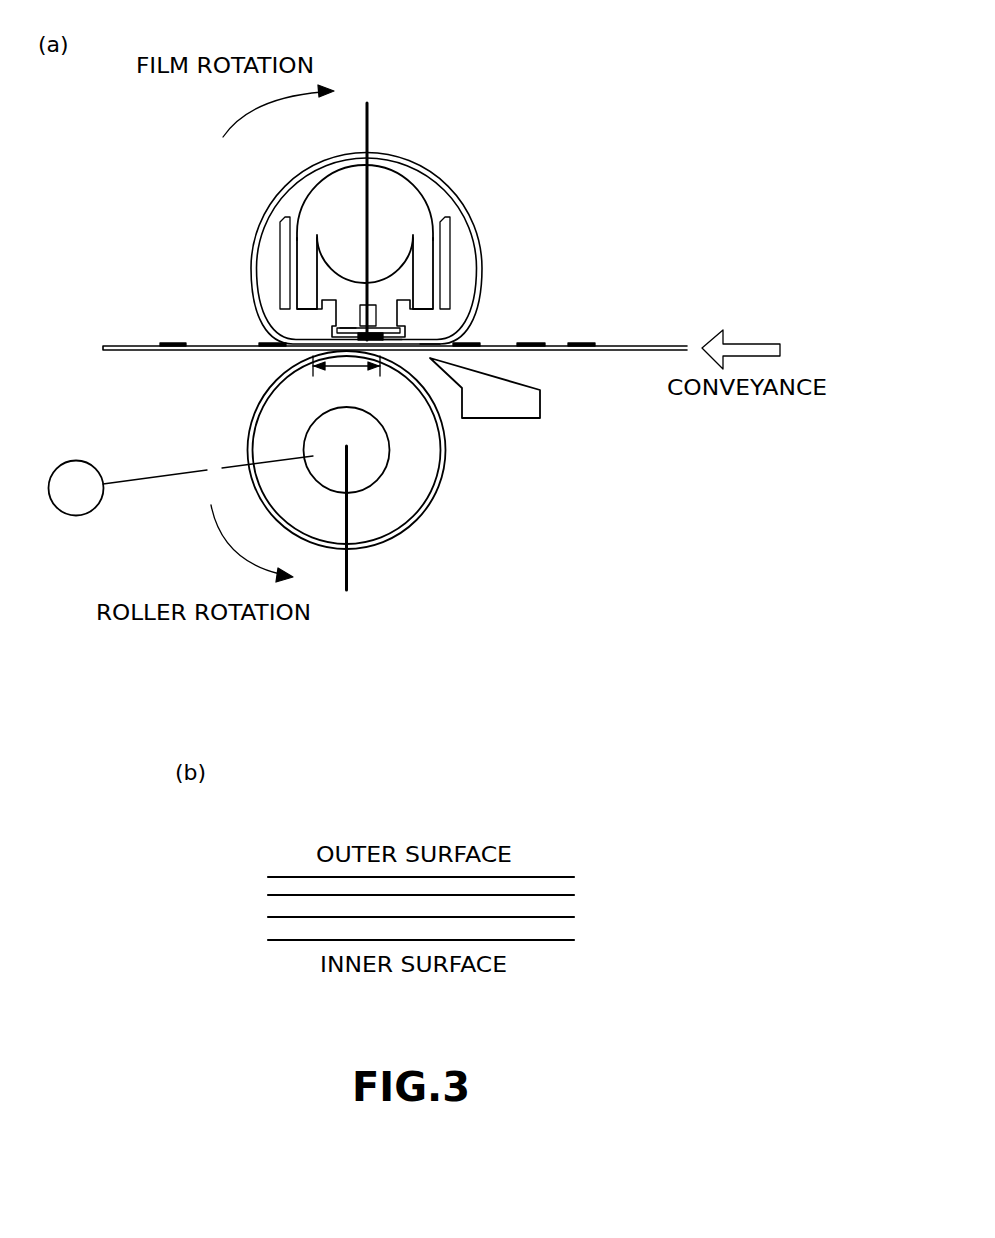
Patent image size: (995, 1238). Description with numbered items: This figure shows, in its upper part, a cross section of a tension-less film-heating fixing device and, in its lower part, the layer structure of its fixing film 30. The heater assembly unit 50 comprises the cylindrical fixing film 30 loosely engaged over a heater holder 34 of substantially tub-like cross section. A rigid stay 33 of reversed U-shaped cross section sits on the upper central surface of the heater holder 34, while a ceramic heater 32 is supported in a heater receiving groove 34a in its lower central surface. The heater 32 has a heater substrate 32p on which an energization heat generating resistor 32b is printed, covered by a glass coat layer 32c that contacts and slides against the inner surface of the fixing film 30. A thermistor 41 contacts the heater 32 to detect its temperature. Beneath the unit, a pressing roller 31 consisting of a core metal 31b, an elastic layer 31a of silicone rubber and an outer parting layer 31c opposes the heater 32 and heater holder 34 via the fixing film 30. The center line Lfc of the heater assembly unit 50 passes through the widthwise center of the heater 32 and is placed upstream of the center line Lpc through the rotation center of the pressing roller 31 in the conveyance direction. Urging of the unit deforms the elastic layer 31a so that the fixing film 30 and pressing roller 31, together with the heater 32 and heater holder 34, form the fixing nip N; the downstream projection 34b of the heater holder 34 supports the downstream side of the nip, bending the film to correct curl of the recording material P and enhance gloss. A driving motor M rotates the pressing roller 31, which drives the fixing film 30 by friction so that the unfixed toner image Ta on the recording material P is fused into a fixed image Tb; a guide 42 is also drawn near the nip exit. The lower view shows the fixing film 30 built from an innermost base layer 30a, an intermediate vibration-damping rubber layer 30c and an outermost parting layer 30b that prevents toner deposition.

The fixing film 30 is at (466, 208).
The film base layer 30a is at (451, 937).
The parting layer 30b is at (556, 883).
The rubber layer 30c is at (556, 907).
The pressing roller 31 is at (407, 459).
The elastic layer 31a is at (395, 487).
The core metal 31b is at (385, 447).
The parting layer 31c is at (417, 523).
The ceramic heater 32 is at (386, 293).
The energization heat generating resistor 32b is at (398, 367).
The glass coat layer 32c is at (432, 357).
The heater substrate 32p is at (412, 327).
The rigid stay 33 is at (388, 178).
The heater holder 34 is at (368, 276).
The heater receiving groove 34a is at (385, 320).
The downstream projection 34b is at (313, 338).
The thermistor 41 is at (348, 322).
The guide member 42 is at (508, 410).
The heater assembly unit 50 is at (427, 522).
The recording material P is at (672, 332).
The toner image Ta is at (553, 331).
The toner image (fixed) Tb is at (225, 345).
The driving motor M is at (181, 486).
The fixing nip N is at (346, 378).
The center line of heater assembly unit Lfc is at (370, 208).
The center line of pressing roller Lpc is at (347, 528).